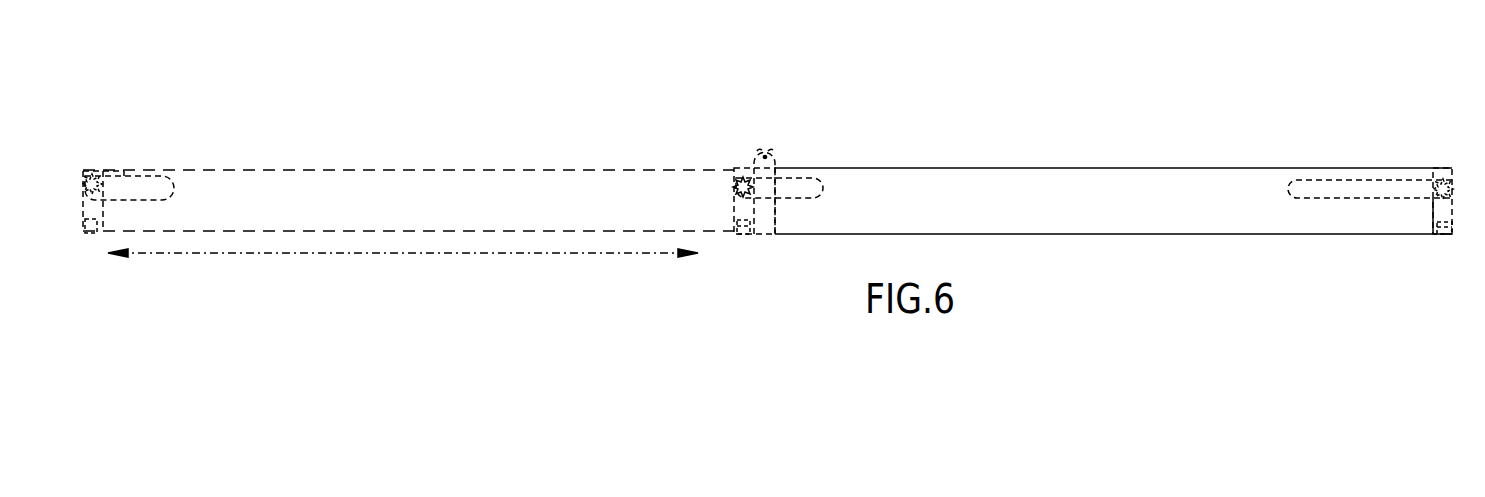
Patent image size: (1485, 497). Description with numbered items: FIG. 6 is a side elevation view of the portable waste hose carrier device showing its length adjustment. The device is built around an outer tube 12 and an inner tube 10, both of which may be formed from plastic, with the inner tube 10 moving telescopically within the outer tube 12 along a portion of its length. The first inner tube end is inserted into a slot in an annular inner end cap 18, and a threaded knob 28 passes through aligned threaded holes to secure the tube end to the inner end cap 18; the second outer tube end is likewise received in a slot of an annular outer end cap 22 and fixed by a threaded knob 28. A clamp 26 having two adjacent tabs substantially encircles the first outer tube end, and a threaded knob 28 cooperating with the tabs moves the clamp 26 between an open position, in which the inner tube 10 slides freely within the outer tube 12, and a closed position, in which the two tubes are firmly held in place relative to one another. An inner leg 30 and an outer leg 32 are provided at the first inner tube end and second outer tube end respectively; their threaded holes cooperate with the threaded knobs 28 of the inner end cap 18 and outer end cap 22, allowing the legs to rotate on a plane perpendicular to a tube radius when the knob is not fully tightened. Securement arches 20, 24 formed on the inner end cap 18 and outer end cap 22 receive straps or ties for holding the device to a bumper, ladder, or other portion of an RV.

The inner tube 10 is at (473, 170).
The outer tube 12 is at (1072, 187).
The inner end cap 18 is at (740, 207).
The securement arch 20 is at (738, 234).
The outer end cap 22 is at (1437, 172).
The securement arch 24 is at (1435, 235).
The clamp 26 is at (765, 213).
The threaded knob 28 is at (755, 157).
The inner leg 30 is at (800, 185).
The outer leg 32 is at (1298, 187).